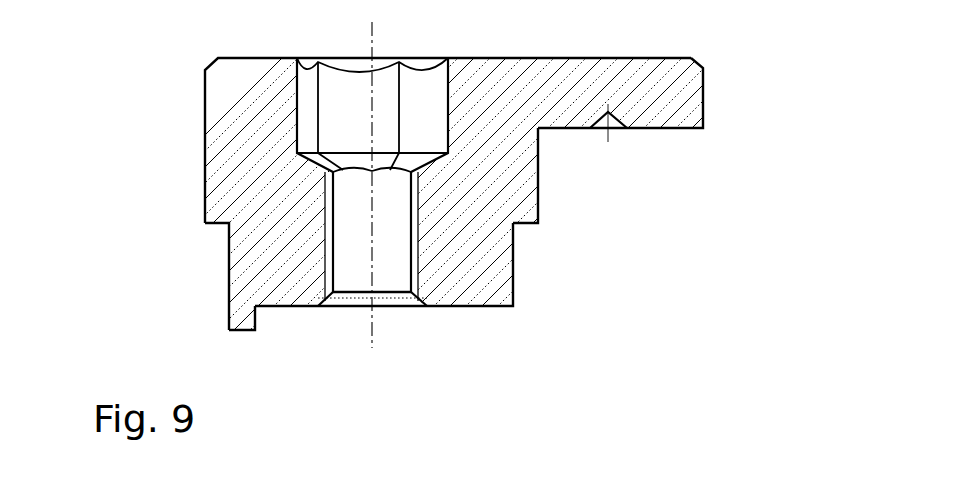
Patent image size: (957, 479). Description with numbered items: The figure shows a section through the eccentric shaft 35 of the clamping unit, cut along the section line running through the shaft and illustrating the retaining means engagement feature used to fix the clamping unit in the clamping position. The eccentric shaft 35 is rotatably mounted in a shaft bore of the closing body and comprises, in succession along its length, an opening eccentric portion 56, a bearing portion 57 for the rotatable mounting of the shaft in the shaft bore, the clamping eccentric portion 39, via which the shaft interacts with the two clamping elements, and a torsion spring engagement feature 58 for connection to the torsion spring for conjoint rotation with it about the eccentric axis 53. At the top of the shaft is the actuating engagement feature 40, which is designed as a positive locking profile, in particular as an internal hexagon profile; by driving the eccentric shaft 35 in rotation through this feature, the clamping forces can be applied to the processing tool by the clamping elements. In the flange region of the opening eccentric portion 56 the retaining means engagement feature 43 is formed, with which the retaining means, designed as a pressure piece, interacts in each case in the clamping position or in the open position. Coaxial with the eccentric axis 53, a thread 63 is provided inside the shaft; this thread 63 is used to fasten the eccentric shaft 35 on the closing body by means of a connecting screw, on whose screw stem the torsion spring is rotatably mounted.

The eccentric shaft 35 is at (710, 236).
The clamping eccentric portion 39 is at (242, 273).
The actuating engagement feature 40 is at (327, 107).
The retaining means engagement feature 43 is at (613, 131).
The eccentric axis 53 is at (372, 183).
The opening eccentric portion 56 is at (681, 90).
The bearing portion 57 is at (532, 175).
The torsion spring engagement feature 58 is at (238, 318).
The thread 63 is at (323, 218).